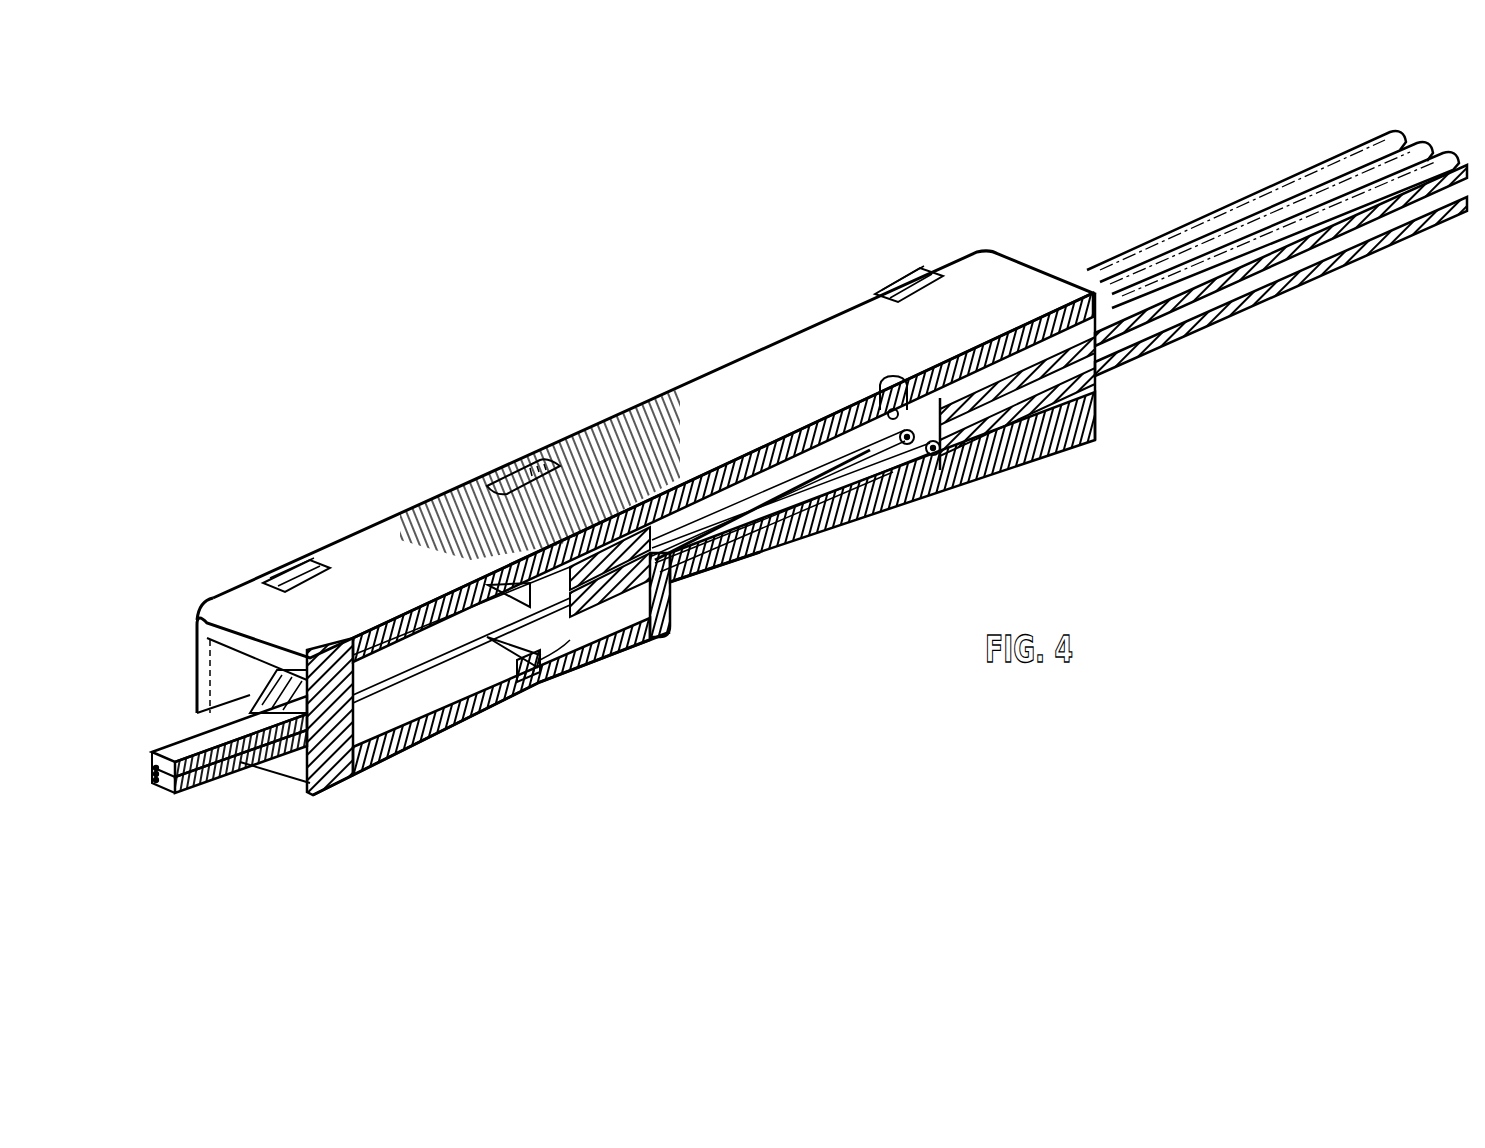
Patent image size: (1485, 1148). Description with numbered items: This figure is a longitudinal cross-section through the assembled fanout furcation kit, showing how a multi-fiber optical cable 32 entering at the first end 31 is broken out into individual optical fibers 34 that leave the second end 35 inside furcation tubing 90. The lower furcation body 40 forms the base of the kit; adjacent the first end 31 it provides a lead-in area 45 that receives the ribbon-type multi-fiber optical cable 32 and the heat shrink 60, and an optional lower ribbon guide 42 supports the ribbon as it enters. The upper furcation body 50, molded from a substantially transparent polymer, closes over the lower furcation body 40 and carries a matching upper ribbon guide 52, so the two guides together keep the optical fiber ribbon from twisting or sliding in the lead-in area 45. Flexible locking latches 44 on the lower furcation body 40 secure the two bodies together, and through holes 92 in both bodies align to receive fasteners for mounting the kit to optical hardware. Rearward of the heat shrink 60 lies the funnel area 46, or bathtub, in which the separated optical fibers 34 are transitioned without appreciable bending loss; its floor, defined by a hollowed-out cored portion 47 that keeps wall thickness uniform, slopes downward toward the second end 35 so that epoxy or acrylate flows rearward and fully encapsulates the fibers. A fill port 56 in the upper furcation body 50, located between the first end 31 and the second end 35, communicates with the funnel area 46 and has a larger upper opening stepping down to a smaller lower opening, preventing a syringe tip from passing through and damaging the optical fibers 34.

The first end 31 is at (250, 673).
The multi-fiber optical cable 32 is at (150, 778).
The optical fibers 34 is at (915, 445).
The second end 35 is at (1040, 268).
The lower furcation body 40 is at (410, 750).
The lower ribbon guide 42 is at (196, 783).
The locking latches 44 is at (290, 581).
The lead-in area 45 is at (573, 632).
The funnel area 46 is at (870, 495).
The cored portion 47 is at (720, 575).
The upper furcation body 50 is at (700, 410).
The upper ribbon guide 52 is at (170, 745).
The fill port 56 is at (883, 378).
The heat shrink 60 is at (590, 630).
The furcation tubing 90 is at (1345, 188).
The through holes 92 is at (522, 483).